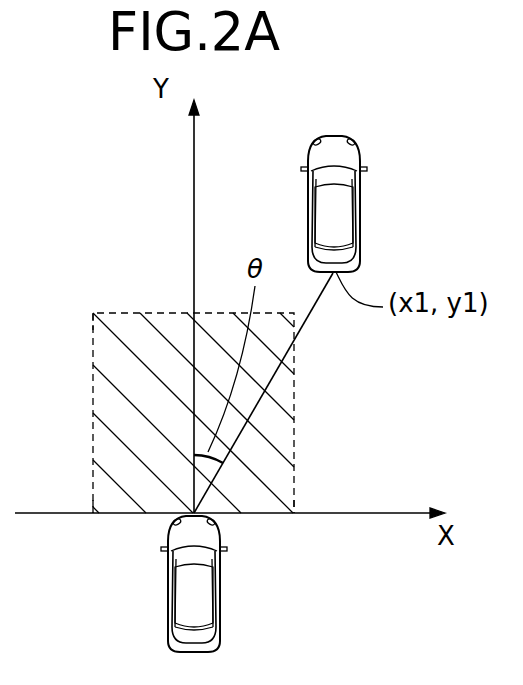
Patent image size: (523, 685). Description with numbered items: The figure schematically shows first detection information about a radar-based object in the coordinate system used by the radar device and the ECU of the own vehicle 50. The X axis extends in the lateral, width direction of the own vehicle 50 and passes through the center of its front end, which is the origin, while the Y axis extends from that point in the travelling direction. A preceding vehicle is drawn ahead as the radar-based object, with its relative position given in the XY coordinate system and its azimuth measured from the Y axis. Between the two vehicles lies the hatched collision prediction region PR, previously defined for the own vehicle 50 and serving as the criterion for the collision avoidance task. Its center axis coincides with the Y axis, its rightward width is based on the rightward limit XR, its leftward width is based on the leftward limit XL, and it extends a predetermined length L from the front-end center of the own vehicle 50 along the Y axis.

The own vehicle 50 is at (222, 590).
The collision prediction region PR is at (97, 397).
The length L is at (93, 307).
The leftward limit XL is at (93, 526).
The rightward limit XR is at (295, 524).